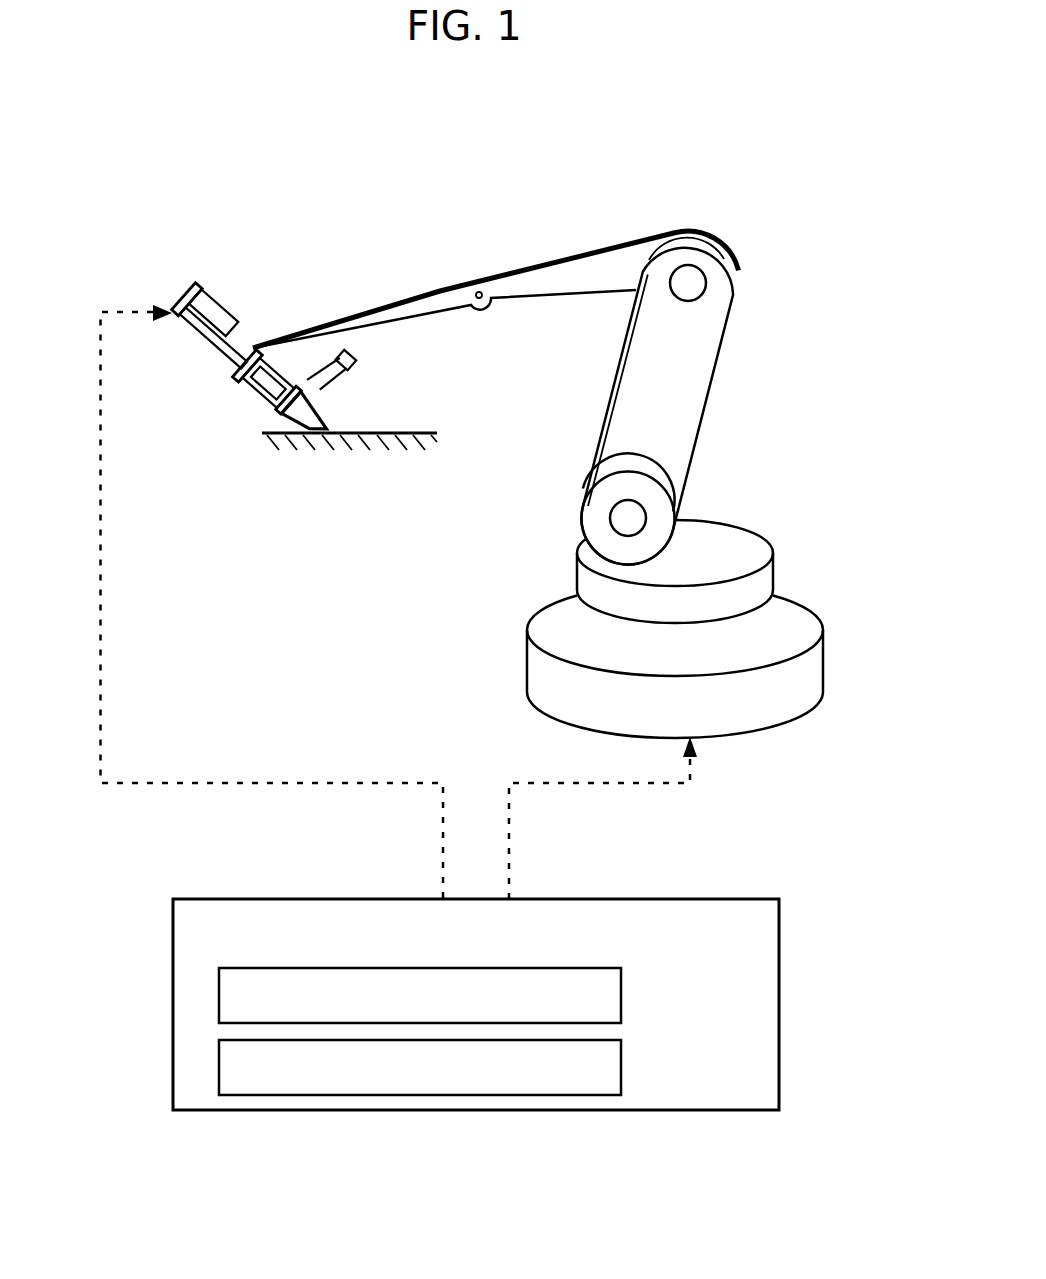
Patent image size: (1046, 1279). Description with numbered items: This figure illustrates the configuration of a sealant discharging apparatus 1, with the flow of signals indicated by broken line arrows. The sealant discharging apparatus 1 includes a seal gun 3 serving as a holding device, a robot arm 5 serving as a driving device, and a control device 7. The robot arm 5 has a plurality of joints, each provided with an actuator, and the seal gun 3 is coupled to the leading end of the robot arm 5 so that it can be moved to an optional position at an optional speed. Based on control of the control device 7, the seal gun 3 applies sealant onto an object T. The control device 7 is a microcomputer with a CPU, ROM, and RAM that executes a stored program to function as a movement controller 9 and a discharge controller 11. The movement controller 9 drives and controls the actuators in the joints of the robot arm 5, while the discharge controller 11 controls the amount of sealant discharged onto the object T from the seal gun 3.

The sealant discharging apparatus 1 is at (342, 177).
The seal gun 3 is at (192, 286).
The robot arm 5 is at (708, 230).
The control device 7 is at (573, 899).
The movement controller 9 is at (622, 990).
The discharge controller 11 is at (622, 1060).
The object T is at (383, 432).